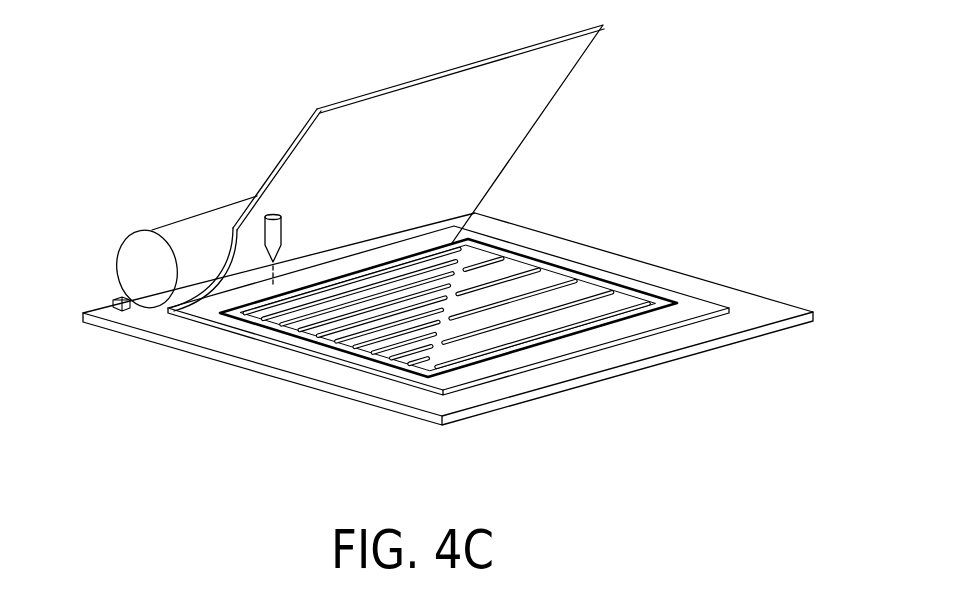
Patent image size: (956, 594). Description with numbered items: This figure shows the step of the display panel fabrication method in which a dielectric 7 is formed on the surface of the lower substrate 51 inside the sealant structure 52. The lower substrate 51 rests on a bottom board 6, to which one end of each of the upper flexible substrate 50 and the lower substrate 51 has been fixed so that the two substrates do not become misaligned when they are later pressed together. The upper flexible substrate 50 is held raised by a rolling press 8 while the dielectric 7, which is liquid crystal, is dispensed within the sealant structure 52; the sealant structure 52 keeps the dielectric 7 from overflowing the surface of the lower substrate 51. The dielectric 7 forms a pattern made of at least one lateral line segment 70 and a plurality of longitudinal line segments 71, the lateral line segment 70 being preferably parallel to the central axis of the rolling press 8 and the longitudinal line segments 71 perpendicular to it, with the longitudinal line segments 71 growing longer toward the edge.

The bottom board 6 is at (672, 277).
The dielectric 7 is at (265, 272).
The rolling press 8 is at (150, 297).
The upper flexible substrate 50 is at (303, 153).
The lower substrate 51 is at (500, 365).
The sealant structure 52 is at (560, 340).
The lateral line segment 70 is at (453, 222).
The longitudinal line segments 71 is at (508, 265).